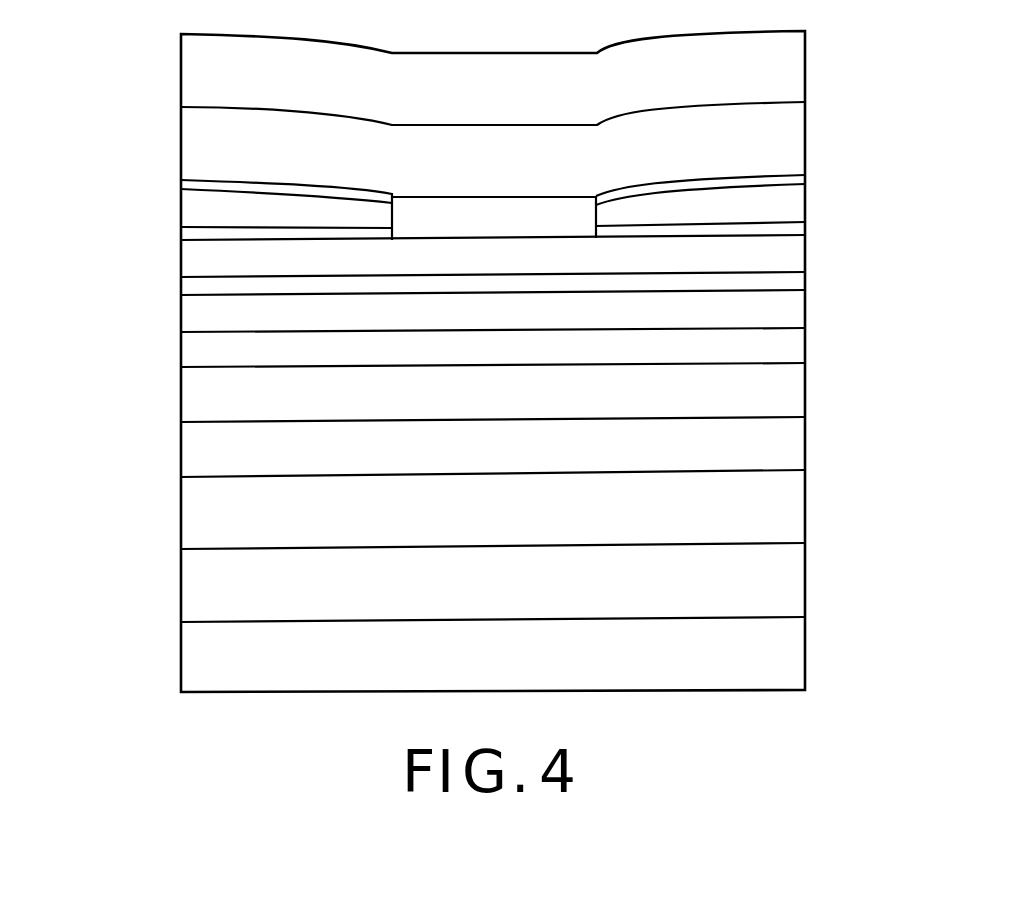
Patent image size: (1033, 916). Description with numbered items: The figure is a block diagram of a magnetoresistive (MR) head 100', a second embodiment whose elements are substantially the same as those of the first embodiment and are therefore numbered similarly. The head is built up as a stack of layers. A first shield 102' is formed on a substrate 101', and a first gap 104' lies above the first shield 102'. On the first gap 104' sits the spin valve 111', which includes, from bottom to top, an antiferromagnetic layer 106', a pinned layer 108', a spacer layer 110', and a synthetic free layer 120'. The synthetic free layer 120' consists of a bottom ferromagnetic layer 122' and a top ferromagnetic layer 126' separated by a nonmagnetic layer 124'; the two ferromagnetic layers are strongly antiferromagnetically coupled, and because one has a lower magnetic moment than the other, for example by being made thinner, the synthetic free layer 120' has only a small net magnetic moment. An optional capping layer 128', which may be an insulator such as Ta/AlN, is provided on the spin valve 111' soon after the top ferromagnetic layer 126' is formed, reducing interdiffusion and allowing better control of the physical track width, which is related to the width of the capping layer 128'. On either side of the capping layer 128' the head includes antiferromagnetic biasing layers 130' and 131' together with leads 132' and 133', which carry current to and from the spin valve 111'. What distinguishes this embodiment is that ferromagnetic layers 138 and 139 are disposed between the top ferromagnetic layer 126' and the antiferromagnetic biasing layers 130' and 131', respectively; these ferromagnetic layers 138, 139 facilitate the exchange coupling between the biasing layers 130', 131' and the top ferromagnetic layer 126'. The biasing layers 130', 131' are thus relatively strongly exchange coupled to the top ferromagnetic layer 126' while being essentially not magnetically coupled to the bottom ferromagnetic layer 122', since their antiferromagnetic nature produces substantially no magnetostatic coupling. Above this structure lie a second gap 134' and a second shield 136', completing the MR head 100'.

The MR head 100' is at (493, 346).
The substrate 101' is at (544, 647).
The first shield 102' is at (544, 571).
The first gap 104' is at (544, 498).
The antiferromagnetic layer 106' is at (544, 439).
The pinned layer 108' is at (544, 386).
The spacer layer 110' is at (544, 346).
The spin valve 111' is at (415, 358).
The synthetic free layer 120' is at (451, 285).
The bottom ferromagnetic layer 122' is at (544, 309).
The nonmagnetic layer 124' is at (544, 277).
The top ferromagnetic layer 126' is at (544, 250).
The capping layer 128' is at (344, 162).
The antiferromagnetic biasing layer 130' is at (242, 176).
The antiferromagnetic biasing layer 131' is at (751, 179).
The lead 132' is at (242, 155).
The lead 133' is at (752, 155).
The second gap 134' is at (545, 127).
The second shield 136' is at (544, 82).
The ferromagnetic layer 138 is at (181, 233).
The ferromagnetic layer 139 is at (806, 230).